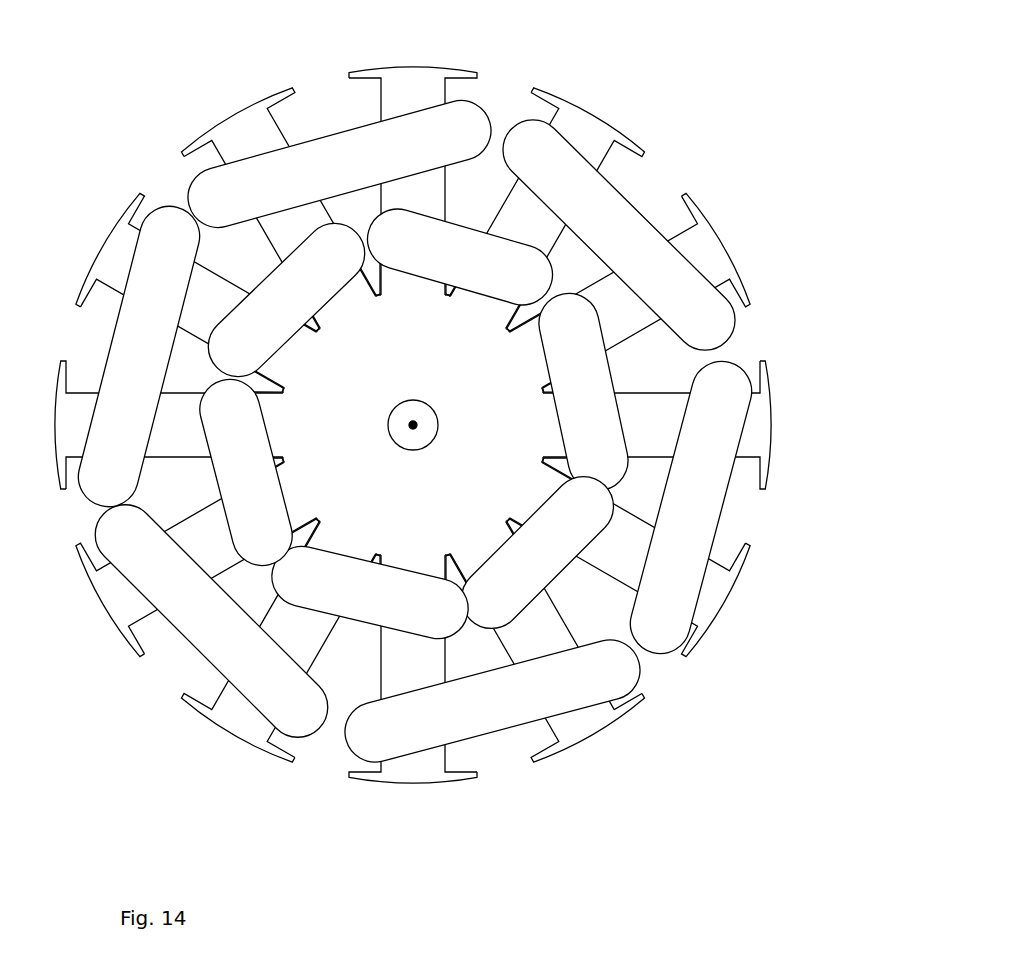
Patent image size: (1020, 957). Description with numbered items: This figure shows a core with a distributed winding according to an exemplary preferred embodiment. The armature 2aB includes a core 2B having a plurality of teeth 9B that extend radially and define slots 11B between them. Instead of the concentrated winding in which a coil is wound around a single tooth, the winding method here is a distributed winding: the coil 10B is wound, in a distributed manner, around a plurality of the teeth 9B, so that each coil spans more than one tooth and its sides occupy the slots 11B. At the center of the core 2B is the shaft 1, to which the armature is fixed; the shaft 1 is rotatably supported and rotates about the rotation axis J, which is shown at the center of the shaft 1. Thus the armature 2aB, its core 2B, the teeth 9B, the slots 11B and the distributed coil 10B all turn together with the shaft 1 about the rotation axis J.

The core 2B is at (270, 58).
The armature 2aB is at (417, 533).
The teeth 9B is at (695, 242).
The coil 10B is at (240, 195).
The slots 11B is at (730, 513).
The shaft 1 is at (390, 432).
The rotation axis J is at (416, 420).